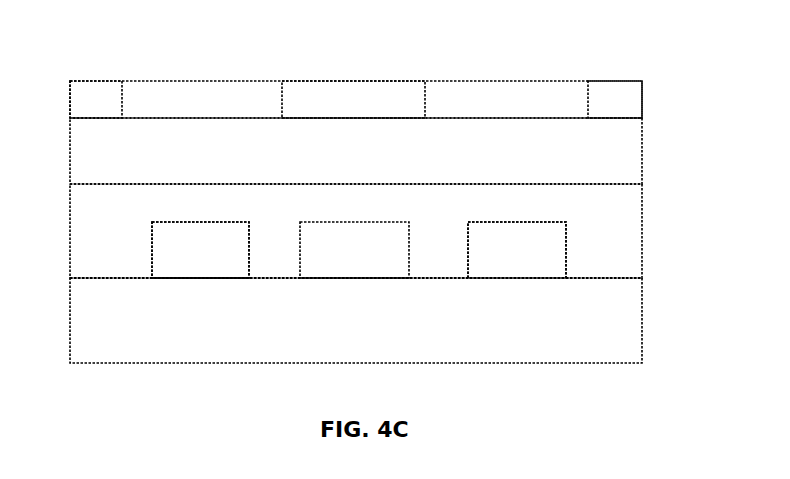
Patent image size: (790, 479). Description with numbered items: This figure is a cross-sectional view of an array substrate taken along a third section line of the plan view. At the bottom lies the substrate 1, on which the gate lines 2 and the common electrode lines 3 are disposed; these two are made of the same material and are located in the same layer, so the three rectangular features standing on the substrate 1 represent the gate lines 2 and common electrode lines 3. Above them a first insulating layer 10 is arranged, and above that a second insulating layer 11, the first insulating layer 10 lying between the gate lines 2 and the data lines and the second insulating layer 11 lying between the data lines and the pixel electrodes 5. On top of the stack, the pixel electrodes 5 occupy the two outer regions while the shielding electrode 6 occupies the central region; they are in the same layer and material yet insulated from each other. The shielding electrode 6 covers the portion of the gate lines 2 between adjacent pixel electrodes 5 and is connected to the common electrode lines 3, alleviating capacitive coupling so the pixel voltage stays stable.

The substrate 1 is at (642, 326).
The gate lines 2 is at (409, 242).
The common electrode lines 3 is at (172, 248).
The pixel electrode 5 is at (98, 80).
The shielding electrode 6 is at (380, 80).
The first insulating layer 10 is at (642, 200).
The second insulating layer 11 is at (642, 135).